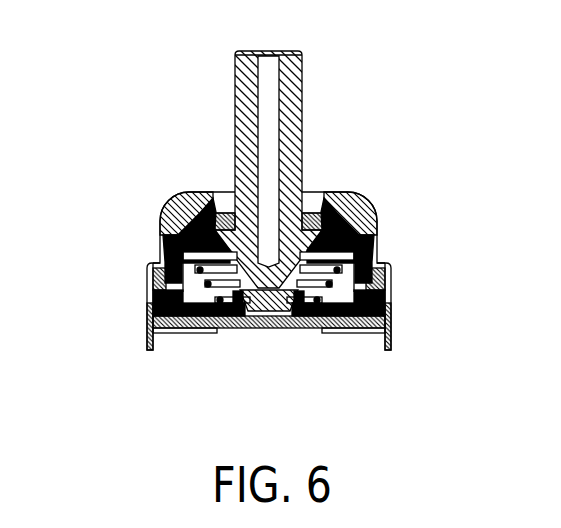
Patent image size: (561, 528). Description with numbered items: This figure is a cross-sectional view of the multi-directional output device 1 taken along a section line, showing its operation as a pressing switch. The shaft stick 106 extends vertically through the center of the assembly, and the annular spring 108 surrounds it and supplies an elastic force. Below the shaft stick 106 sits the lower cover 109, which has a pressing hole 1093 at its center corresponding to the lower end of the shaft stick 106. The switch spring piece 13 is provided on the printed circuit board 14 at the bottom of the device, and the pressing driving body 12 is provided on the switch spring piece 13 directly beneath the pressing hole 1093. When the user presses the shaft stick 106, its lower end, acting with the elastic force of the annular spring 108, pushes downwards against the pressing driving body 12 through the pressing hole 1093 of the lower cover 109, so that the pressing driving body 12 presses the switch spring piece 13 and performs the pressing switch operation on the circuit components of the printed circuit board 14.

The multi-directional output device 1 is at (145, 124).
The shaft stick 106 is at (306, 78).
The annular spring 108 is at (385, 271).
The lower cover 109 is at (383, 302).
The pressing driving body 12 is at (247, 303).
The switch spring piece 13 is at (280, 307).
The printed circuit board 14 is at (352, 331).
The pressing hole 1093 is at (307, 314).